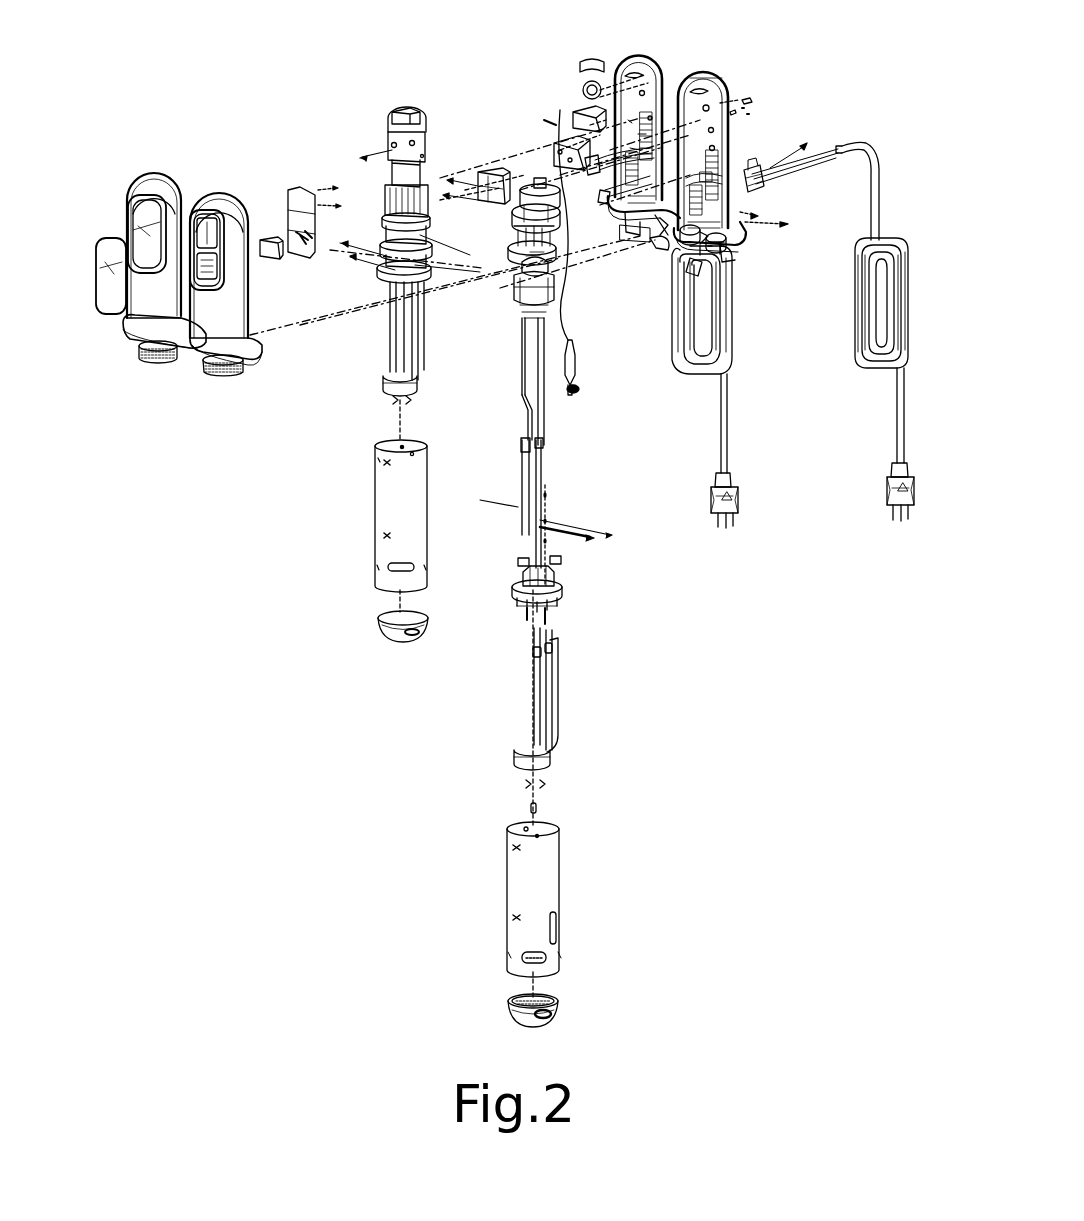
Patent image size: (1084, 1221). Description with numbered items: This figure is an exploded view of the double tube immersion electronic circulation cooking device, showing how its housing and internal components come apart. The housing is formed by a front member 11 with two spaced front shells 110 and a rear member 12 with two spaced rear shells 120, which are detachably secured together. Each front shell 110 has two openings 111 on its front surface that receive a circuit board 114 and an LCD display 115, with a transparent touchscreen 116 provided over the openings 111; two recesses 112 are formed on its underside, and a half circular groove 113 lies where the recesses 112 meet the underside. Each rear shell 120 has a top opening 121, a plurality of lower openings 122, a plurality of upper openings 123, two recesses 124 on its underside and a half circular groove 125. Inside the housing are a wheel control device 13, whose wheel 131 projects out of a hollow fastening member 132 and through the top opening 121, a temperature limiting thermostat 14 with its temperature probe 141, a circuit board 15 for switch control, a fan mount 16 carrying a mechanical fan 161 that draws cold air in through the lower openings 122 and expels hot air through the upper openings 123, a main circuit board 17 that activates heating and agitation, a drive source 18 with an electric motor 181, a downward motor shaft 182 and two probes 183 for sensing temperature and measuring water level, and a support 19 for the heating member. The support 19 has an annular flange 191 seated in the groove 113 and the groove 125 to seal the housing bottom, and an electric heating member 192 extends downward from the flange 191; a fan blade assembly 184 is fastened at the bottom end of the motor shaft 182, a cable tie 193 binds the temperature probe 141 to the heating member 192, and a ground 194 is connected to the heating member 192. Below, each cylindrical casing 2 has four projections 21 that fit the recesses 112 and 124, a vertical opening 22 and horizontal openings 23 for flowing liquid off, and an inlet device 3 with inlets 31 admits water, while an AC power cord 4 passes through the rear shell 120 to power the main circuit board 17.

The cylindrical casing 2 is at (512, 880).
The inlet device 3 is at (560, 1001).
The AC power cord 4 is at (857, 143).
The front member 11 is at (190, 355).
The rear member 12 is at (668, 215).
The wheel control device 13 is at (575, 110).
The temperature limiting thermostat 14 is at (553, 150).
The circuit board for switch control 15 is at (487, 170).
The fan mount 16 is at (550, 190).
The main circuit board 17 is at (520, 245).
The drive source for agitation and testing 18 is at (522, 296).
The support for heating member 19 is at (518, 582).
The projection 21 is at (524, 828).
The vertical opening 22 is at (556, 918).
The horizontal opening 23 is at (525, 955).
The inlet 31 is at (556, 1016).
The front shell 110 is at (240, 280).
The opening 111 is at (215, 205).
The recess 112 is at (223, 378).
The half circular groove 113 is at (243, 365).
The circuit board 114 is at (283, 262).
The LCD display 115 is at (300, 187).
The transparent touchscreen 116 is at (115, 303).
The rear shell 120 is at (728, 118).
The top opening 121 is at (705, 72).
The lower opening 122 is at (735, 220).
The upper opening 123 is at (715, 97).
The recess 124 is at (722, 243).
The half circular groove 125 is at (690, 232).
The wheel 131 is at (584, 80).
The hollow fastening member 132 is at (585, 62).
The temperature probe 141 is at (578, 355).
The mechanical fan 161 is at (518, 205).
The electric motor 181 is at (553, 264).
The motor shaft 182 is at (530, 310).
The probe 183 is at (534, 480).
The fan blade assembly 184 is at (548, 783).
The annular flange 191 is at (514, 590).
The electric heating member 192 is at (558, 692).
The cable tie 193 is at (580, 393).
The ground 194 is at (575, 528).